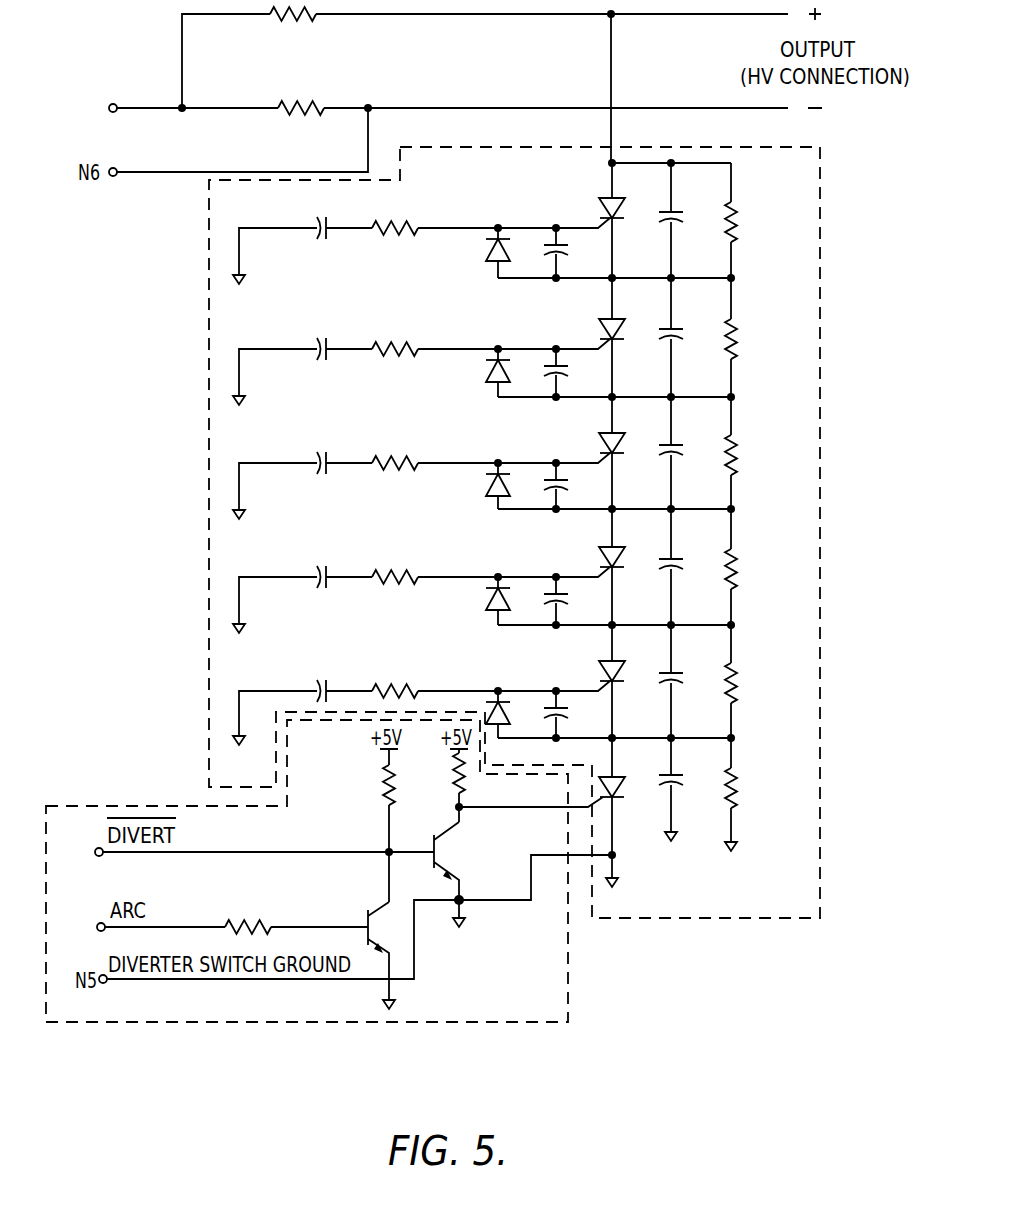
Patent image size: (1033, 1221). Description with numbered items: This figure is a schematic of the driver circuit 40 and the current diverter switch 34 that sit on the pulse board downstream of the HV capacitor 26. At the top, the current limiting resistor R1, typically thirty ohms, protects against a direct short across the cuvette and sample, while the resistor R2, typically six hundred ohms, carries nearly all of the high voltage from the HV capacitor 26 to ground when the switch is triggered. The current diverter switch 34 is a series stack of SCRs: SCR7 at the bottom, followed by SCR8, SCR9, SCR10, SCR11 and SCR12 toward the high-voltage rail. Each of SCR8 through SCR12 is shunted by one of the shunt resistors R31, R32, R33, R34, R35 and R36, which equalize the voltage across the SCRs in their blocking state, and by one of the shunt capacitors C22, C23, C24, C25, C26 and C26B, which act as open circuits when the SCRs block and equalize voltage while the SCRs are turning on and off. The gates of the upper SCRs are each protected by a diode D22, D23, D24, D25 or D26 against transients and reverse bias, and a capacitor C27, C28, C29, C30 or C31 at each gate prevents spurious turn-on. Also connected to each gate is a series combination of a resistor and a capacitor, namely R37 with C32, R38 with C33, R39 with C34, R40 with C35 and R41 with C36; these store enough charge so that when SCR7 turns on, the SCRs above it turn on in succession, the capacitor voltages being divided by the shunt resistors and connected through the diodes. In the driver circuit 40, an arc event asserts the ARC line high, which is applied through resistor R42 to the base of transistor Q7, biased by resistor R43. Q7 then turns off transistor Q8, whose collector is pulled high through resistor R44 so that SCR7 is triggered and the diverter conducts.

The HV capacitor 26 is at (152, 129).
The current diverter switch 34 is at (822, 815).
The driver circuit 40 is at (570, 965).
The current limiting resistor R1 is at (293, 30).
The resistor R2 is at (301, 121).
The capacitor C32 is at (316, 215).
The resistor R37 is at (395, 213).
The diode D22 is at (480, 251).
The capacitor C27 is at (574, 251).
The SCR SCR12 is at (632, 195).
The shunt capacitor C22 is at (689, 220).
The shunt resistor R31 is at (750, 220).
The capacitor C33 is at (316, 336).
The resistor R38 is at (395, 334).
The diode D23 is at (480, 371).
The capacitor C28 is at (574, 371).
The SCR SCR11 is at (632, 313).
The shunt capacitor C23 is at (689, 337).
The shunt resistor R32 is at (750, 337).
The capacitor C34 is at (316, 450).
The resistor R39 is at (395, 448).
The diode D24 is at (480, 484).
The capacitor C29 is at (574, 484).
The SCR SCR10 is at (632, 430).
The shunt capacitor C24 is at (689, 453).
The shunt resistor R33 is at (750, 453).
The capacitor C35 is at (316, 564).
The resistor R40 is at (395, 562).
The diode D25 is at (480, 599).
The capacitor C30 is at (574, 599).
The SCR SCR9 is at (628, 543).
The shunt capacitor C25 is at (689, 567).
The shunt resistor R34 is at (750, 567).
The capacitor C36 is at (316, 678).
The resistor R41 is at (395, 676).
The diode D26 is at (517, 712).
The capacitor C31 is at (574, 712).
The SCR SCR8 is at (628, 658).
The shunt capacitor C26 is at (689, 681).
The shunt resistor R35 is at (750, 681).
The SCR SCR7 is at (628, 773).
The shunt capacitor C26B is at (691, 789).
The shunt resistor R36 is at (750, 794).
The resistor R42 is at (248, 911).
The resistor R43 is at (373, 825).
The resistor R44 is at (443, 785).
The transistor Q7 is at (386, 951).
The transistor Q8 is at (457, 861).